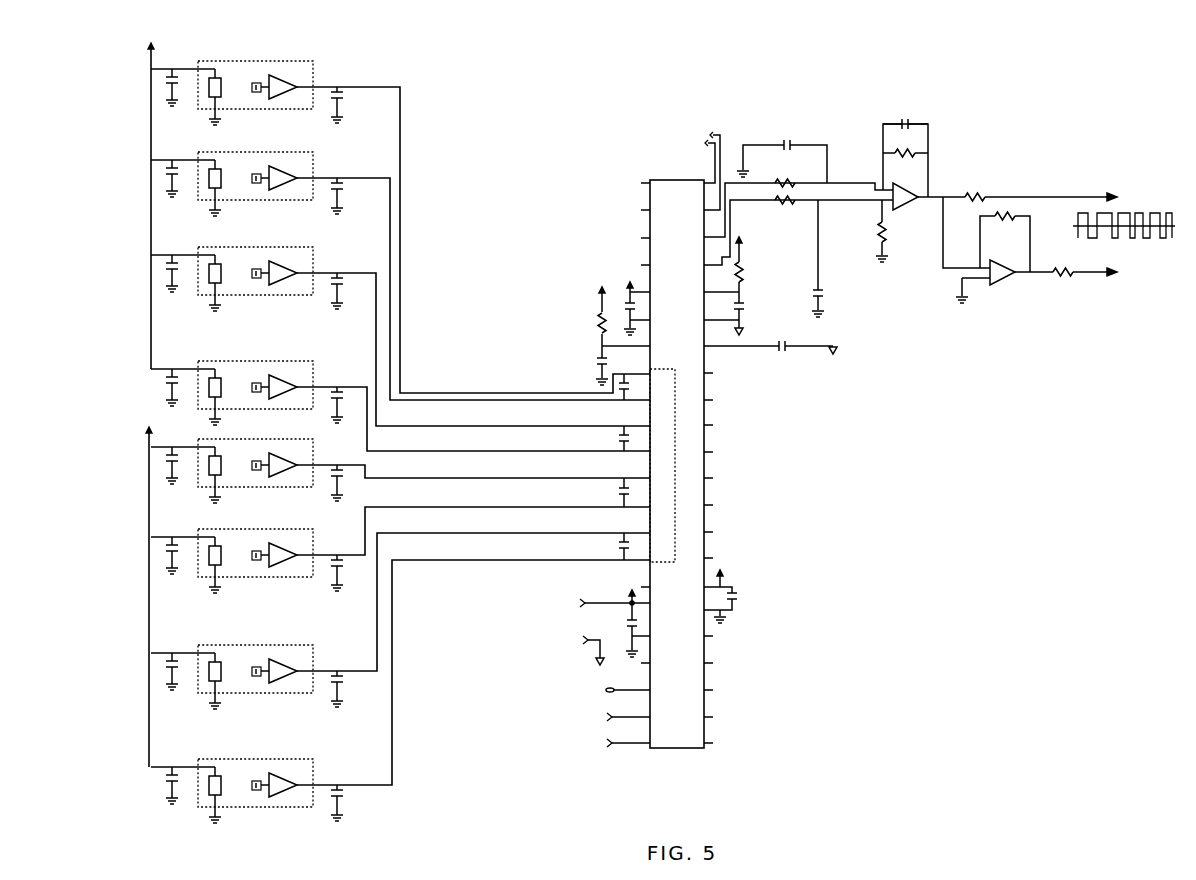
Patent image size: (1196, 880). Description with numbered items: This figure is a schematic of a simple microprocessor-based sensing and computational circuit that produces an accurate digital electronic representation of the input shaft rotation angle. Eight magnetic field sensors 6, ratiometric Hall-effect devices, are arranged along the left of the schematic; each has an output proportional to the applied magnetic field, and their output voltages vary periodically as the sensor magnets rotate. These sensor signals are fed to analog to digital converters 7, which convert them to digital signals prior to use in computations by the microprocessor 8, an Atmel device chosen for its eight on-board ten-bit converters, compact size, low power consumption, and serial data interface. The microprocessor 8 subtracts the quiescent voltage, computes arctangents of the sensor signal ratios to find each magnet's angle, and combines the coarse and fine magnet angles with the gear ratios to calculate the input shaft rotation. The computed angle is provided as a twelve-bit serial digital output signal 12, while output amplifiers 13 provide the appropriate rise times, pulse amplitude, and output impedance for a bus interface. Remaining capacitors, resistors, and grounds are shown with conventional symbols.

The magnetic field sensor 6 is at (318, 57).
The analog to digital converter 7 is at (670, 432).
The microprocessor 8 is at (697, 752).
The serial digital output signal 12 is at (1143, 258).
The output amplifier 13 is at (907, 208).